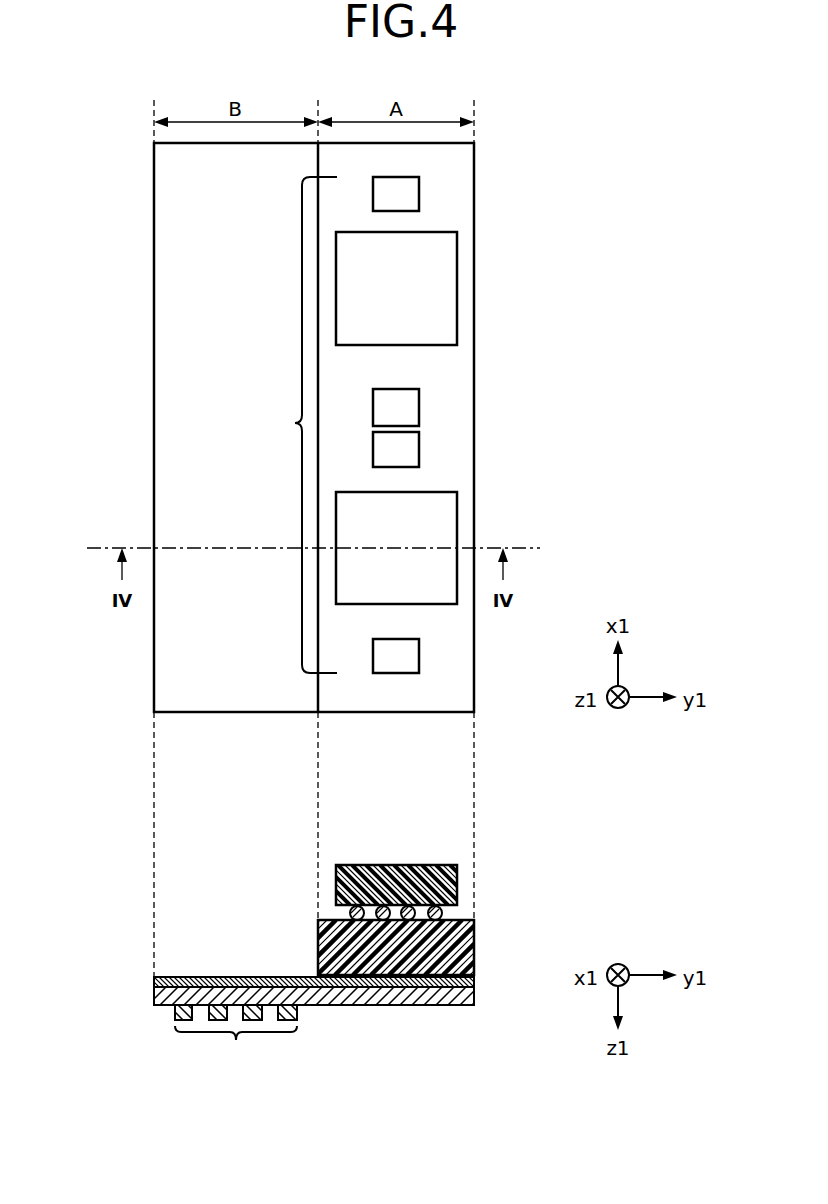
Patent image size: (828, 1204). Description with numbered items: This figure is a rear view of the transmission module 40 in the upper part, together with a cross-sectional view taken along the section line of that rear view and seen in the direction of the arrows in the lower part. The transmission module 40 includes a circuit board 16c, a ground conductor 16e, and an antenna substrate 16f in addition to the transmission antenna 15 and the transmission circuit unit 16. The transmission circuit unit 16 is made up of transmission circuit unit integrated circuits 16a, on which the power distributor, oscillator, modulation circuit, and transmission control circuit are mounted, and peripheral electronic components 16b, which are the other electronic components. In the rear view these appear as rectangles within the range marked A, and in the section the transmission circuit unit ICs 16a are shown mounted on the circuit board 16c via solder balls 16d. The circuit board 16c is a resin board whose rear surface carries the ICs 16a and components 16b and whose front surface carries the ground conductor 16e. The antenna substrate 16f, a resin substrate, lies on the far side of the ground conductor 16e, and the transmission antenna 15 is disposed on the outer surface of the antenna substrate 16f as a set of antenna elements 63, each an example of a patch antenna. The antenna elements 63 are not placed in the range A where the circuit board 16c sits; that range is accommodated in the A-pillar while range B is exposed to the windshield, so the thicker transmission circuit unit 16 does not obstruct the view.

The transmission module 40 is at (65, 159).
The transmission circuit unit 16 is at (295, 423).
The transmission circuit unit integrated circuits 16a is at (435, 287).
The peripheral electronic components 16b is at (405, 195).
The circuit board 16c is at (458, 694).
The solder balls 16d is at (440, 910).
The ground conductor 16e is at (172, 693).
The antenna substrate 16f is at (465, 998).
The antenna elements 63 is at (170, 1010).
The transmission antenna 15 is at (236, 1049).